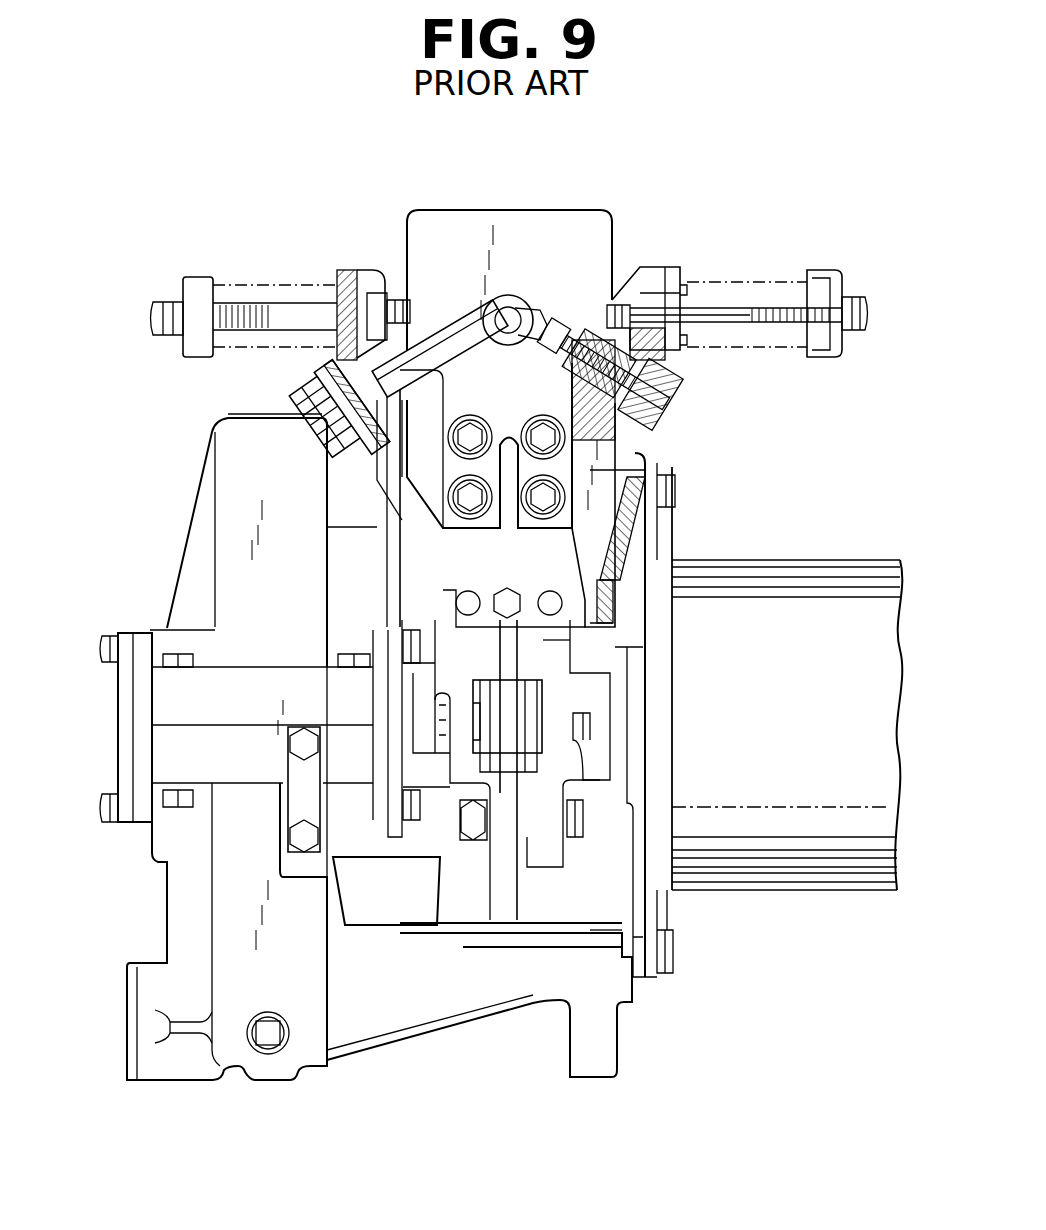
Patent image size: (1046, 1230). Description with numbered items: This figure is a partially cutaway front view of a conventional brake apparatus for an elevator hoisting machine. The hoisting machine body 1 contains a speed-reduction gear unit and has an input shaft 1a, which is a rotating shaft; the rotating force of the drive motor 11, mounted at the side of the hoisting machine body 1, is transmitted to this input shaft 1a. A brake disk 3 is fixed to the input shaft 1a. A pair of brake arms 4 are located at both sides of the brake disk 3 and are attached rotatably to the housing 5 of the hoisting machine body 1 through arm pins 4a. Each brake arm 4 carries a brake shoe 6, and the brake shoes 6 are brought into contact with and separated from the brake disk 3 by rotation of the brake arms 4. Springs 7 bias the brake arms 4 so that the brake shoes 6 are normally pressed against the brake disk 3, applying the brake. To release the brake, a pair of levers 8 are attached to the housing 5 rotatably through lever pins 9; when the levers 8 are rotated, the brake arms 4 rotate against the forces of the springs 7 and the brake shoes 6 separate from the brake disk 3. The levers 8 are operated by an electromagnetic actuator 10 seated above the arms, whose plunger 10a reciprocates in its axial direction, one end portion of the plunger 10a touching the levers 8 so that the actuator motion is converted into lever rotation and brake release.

The hoisting machine body 1 is at (240, 447).
The input shaft 1a is at (433, 747).
The brake disk 3 is at (503, 847).
The brake arms 4 is at (603, 452).
The arm pins 4a is at (468, 592).
The housing 5 is at (368, 282).
The brake shoes 6 is at (567, 873).
The springs 7 is at (230, 287).
The levers 8 is at (455, 330).
The lever pins 9 is at (335, 370).
The electromagnetic actuator 10 is at (490, 210).
The plunger 10a is at (507, 297).
The drive motor 11 is at (850, 615).